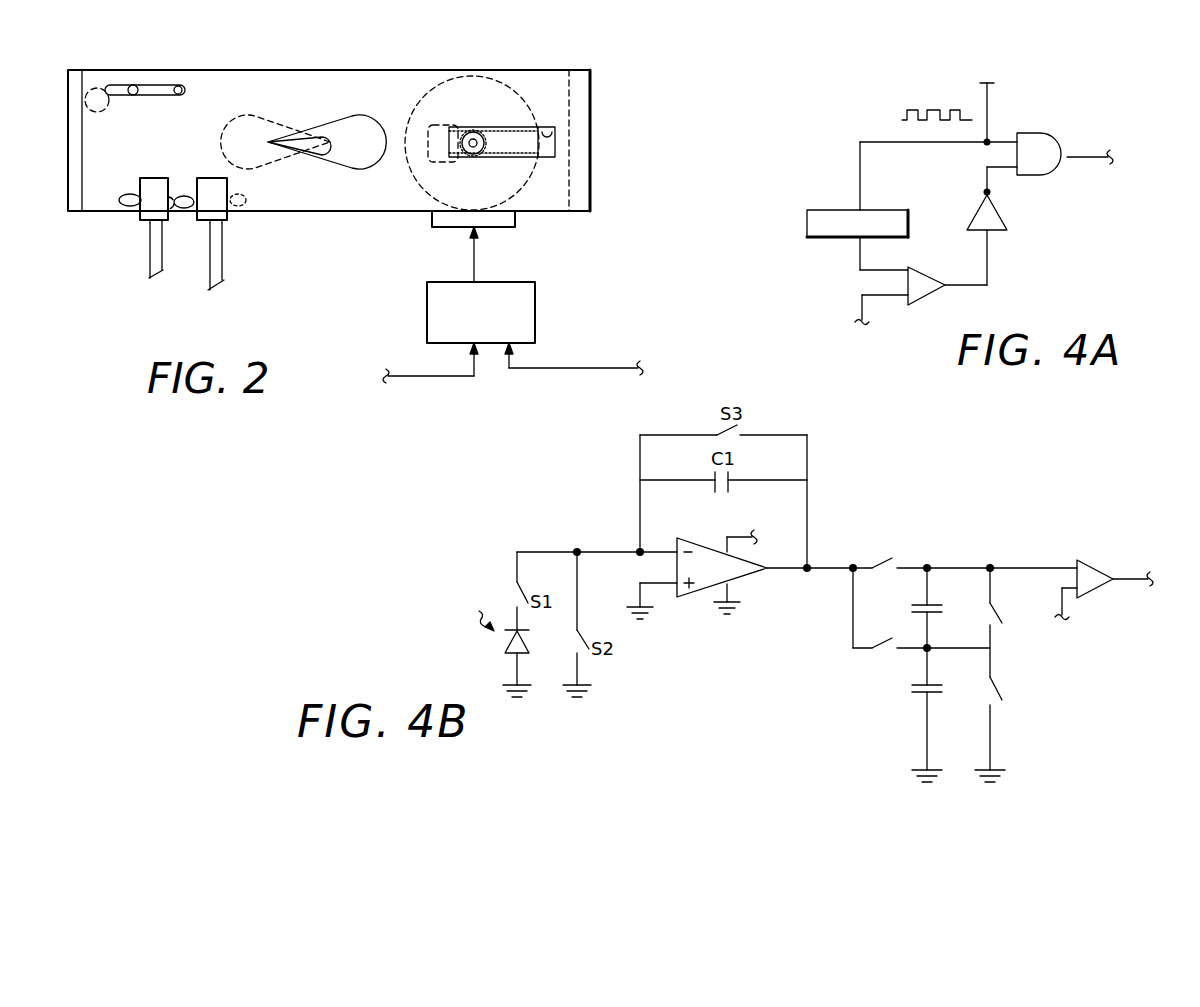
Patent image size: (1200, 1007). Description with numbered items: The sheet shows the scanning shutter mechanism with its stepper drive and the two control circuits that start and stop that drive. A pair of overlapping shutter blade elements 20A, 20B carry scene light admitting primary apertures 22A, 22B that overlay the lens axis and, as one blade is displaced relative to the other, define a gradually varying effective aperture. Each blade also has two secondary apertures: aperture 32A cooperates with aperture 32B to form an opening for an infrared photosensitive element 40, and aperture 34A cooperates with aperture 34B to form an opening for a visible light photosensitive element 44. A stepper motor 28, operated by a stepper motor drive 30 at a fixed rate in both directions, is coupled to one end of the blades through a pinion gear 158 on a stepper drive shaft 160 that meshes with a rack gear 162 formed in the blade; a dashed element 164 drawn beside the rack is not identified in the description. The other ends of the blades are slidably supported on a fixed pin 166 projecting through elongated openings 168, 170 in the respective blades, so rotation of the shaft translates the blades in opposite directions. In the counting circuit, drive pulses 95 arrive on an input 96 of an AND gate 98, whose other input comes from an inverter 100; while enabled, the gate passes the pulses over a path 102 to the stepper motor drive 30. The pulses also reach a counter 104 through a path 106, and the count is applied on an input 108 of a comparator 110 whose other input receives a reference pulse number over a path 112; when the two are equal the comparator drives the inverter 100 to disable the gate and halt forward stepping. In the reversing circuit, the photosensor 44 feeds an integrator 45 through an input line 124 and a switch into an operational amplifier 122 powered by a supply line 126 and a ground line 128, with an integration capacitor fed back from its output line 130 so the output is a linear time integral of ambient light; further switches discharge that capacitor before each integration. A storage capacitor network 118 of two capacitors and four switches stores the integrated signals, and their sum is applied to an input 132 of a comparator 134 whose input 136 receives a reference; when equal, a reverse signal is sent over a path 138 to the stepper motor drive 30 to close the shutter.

In FIG. 2, the shutter blade element 20A is at (583, 71).
In FIG. 2, the shutter blade element 20B is at (68, 152).
In FIG. 2, the primary aperture 22A is at (357, 132).
In FIG. 2, the primary aperture 22B is at (263, 113).
In FIG. 2, the stepper motor 28 is at (472, 97).
In FIG. 2, the stepper motor drive 30 is at (535, 315).
In FIG. 2, the secondary aperture 32A is at (189, 195).
In FIG. 2, the secondary aperture 32B is at (232, 211).
In FIG. 2, the secondary aperture 34A is at (129, 207).
In FIG. 2, the secondary aperture 34B is at (173, 220).
In FIG. 2, the infrared photosensitive element 40 is at (222, 178).
In FIG. 2, the visible light photosensitive element 44 is at (150, 178).
In FIG. 4B, the visible light photosensitive element 44 is at (504, 647).
In FIG. 4B, the integrator 45 is at (862, 505).
In FIG. 4A, the pulses 95 is at (937, 92).
In FIG. 4A, the AND gate input 96 is at (988, 112).
In FIG. 4A, the AND gate 98 is at (1033, 133).
In FIG. 4A, the inverter 100 is at (993, 214).
In FIG. 2, the path 102 is at (476, 371).
In FIG. 4A, the path 102 is at (1082, 155).
In FIG. 4A, the counter 104 is at (893, 209).
In FIG. 4A, the path 106 is at (858, 180).
In FIG. 4A, the comparator input 108 is at (858, 262).
In FIG. 4A, the comparator 110 is at (923, 278).
In FIG. 4A, the path 112 is at (858, 308).
In FIG. 4B, the storage capacitor network 118 is at (962, 531).
In FIG. 4B, the operational amplifier 122 is at (743, 564).
In FIG. 4B, the input line 124 is at (663, 551).
In FIG. 4B, the supply line 126 is at (733, 535).
In FIG. 4B, the ground line 128 is at (729, 596).
In FIG. 4B, the output line 130 is at (832, 568).
In FIG. 4B, the comparator input 132 is at (1013, 567).
In FIG. 4B, the comparator 134 is at (1089, 563).
In FIG. 4B, the comparator input 136 is at (1061, 608).
In FIG. 2, the path 138 is at (554, 367).
In FIG. 4B, the path 138 is at (1130, 578).
In FIG. 2, the pinion gear 158 is at (478, 130).
In FIG. 2, the stepper drive shaft 160 is at (475, 147).
In FIG. 2, the rack gear 162 is at (551, 135).
In FIG. 2, the motor 164 is at (435, 168).
In FIG. 2, the pin 166 is at (133, 86).
In FIG. 2, the elongated opening 168 is at (178, 87).
In FIG. 2, the elongated opening 170 is at (100, 111).